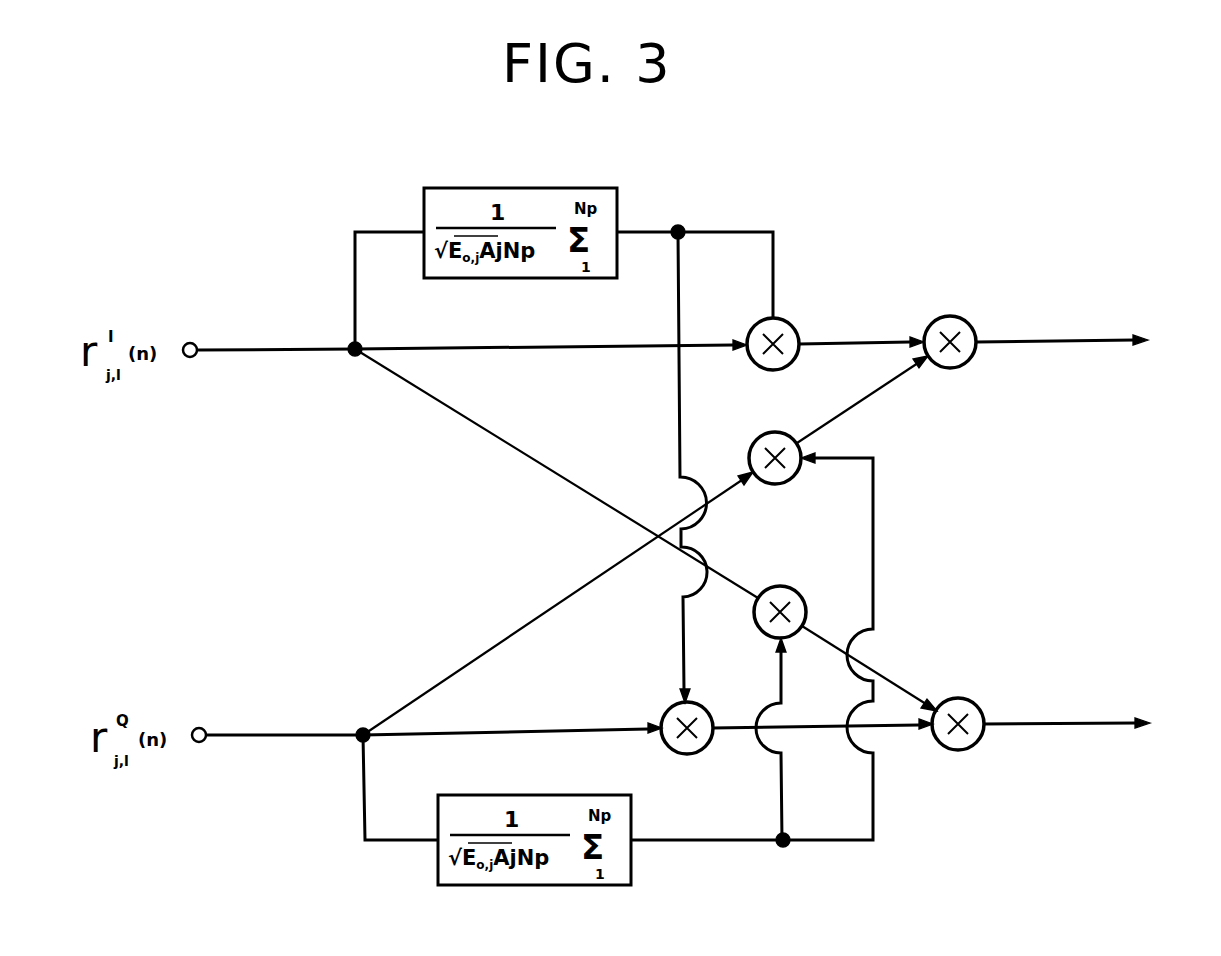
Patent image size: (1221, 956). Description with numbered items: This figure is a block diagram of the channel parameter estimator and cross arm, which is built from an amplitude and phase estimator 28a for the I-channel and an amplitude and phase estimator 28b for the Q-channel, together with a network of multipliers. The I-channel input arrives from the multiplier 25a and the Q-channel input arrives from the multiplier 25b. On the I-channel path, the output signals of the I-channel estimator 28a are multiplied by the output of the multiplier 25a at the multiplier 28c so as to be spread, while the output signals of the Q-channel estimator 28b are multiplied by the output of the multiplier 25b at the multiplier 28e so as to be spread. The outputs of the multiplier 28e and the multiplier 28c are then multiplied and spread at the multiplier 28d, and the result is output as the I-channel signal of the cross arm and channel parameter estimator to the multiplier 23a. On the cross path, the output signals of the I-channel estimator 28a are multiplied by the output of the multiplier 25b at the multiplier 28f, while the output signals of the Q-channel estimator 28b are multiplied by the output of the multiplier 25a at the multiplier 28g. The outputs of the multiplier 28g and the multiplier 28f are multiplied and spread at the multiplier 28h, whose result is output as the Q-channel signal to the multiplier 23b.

The multiplier 25a is at (194, 343).
The multiplier 25b is at (203, 728).
The multiplier 23a is at (1130, 333).
The multiplier 23b is at (1136, 735).
The amplitude and phase estimator for the I-channel 28a is at (579, 189).
The amplitude and phase estimator for the Q-channel 28b is at (585, 888).
The multiplier 28c is at (793, 326).
The multiplier 28d is at (951, 316).
The multiplier 28e is at (777, 432).
The multiplier 28f is at (670, 705).
The multiplier 28g is at (795, 587).
The multiplier 28h is at (960, 750).